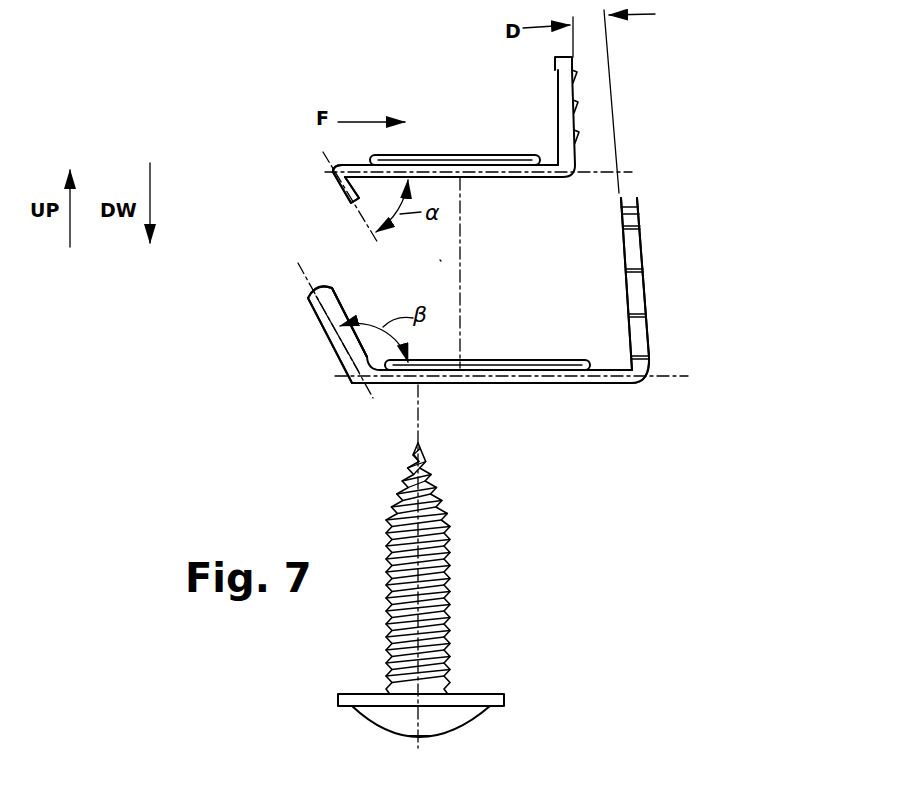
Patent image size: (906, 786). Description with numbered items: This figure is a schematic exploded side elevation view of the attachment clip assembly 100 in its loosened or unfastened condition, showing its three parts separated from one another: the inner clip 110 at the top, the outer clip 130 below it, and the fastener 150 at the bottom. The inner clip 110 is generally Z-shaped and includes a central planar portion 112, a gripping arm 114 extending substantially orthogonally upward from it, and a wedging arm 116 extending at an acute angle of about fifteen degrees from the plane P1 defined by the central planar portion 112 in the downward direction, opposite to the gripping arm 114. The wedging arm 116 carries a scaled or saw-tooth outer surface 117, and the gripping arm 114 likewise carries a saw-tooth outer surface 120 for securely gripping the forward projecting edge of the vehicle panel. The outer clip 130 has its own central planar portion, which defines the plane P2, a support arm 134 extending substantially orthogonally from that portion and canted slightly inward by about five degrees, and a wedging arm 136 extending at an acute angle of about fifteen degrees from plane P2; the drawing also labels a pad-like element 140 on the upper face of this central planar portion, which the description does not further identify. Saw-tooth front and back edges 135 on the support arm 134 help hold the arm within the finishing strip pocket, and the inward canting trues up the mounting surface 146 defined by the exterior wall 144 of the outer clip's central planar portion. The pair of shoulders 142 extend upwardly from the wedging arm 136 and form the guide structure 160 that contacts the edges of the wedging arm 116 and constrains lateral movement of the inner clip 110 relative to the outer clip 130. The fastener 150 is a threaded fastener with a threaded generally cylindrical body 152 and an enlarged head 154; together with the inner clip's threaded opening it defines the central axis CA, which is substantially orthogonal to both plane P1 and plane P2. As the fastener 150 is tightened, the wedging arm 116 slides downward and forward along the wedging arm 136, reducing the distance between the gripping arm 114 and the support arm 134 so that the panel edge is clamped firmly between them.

The attachment clip assembly 100 is at (668, 86).
The inner clip 110 is at (626, 108).
The central planar portion 112 is at (447, 135).
The gripping arm 114 is at (565, 78).
The wedging arm 116 is at (345, 198).
The saw-tooth outer surface 117 is at (330, 178).
The saw-tooth outer surface 120 is at (578, 107).
The outer clip 130 is at (682, 336).
The support arm 134 is at (645, 277).
The front and back edges of support arm 135 is at (635, 248).
The wedging arm 136 is at (332, 345).
The lower pad 140 is at (500, 378).
The pair of shoulders 142 is at (340, 312).
The exterior wall 144 is at (457, 385).
The mounting surface 146 is at (560, 384).
The fastener 150 is at (469, 566).
The threaded body 152 is at (400, 602).
The enlarged head 154 is at (443, 717).
The guide structure 160 is at (448, 258).
The plane P1 is at (615, 172).
The plane P2 is at (670, 380).
The central axis CA is at (447, 528).